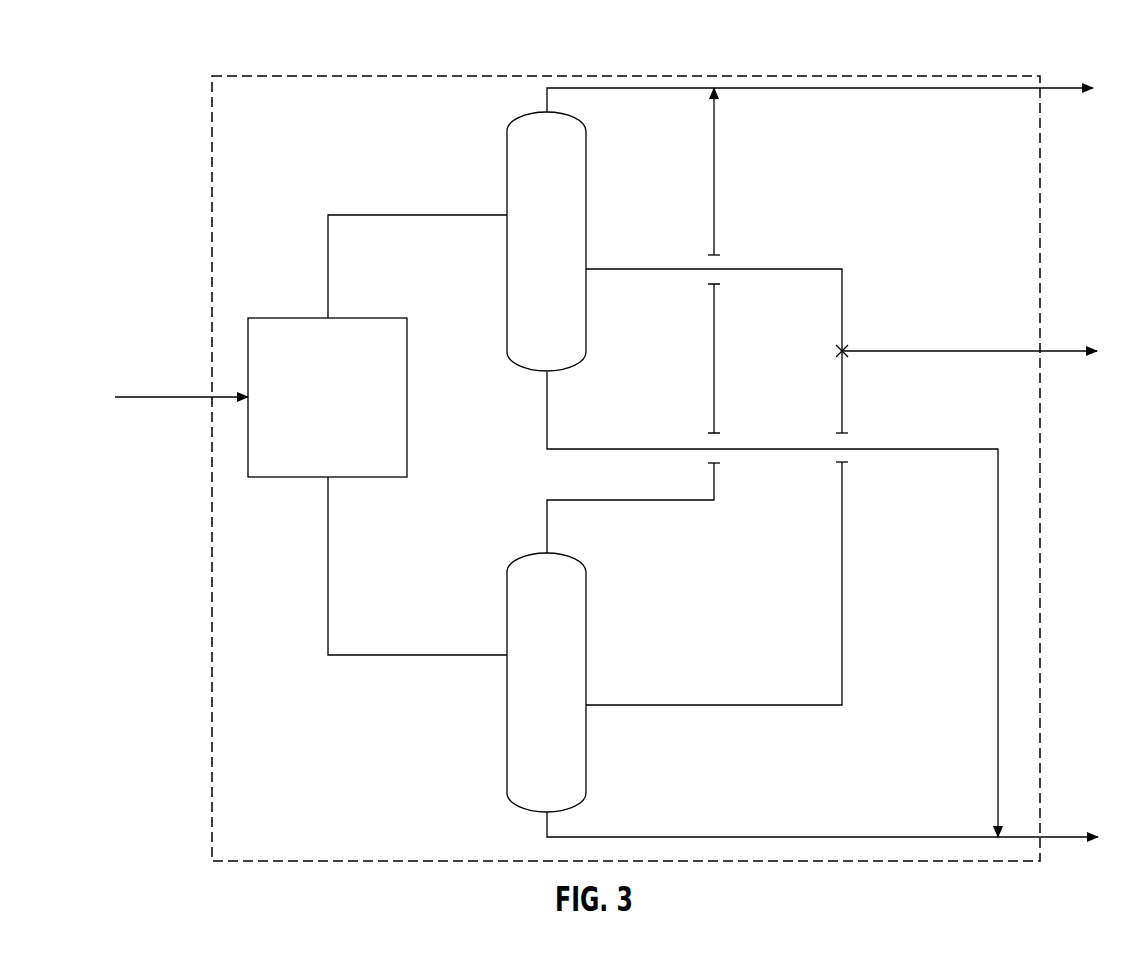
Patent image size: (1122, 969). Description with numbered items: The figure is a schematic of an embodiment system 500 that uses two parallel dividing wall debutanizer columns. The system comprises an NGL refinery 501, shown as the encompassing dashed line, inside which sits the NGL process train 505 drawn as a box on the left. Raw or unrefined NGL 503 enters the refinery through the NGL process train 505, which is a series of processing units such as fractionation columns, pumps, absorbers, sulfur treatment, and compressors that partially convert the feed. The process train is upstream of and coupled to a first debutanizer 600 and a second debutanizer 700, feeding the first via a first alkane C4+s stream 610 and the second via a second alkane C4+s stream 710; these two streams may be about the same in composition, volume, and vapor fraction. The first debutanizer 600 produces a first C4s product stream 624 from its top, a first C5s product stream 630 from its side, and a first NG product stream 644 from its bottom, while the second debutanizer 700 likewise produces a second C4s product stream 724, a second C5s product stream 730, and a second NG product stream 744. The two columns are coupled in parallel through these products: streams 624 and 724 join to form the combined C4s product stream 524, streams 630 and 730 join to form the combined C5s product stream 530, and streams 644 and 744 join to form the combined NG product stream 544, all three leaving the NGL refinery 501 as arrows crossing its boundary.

The embodiment system 500 is at (164, 42).
The NGL refinery 501 is at (990, 78).
The raw or unrefined NGL 503 is at (182, 397).
The NGL process train 505 is at (349, 412).
The combined C4s product stream 524 is at (962, 90).
The combined C5s product stream 530 is at (962, 353).
The combined NG product stream 544 is at (1062, 836).
The first debutanizer 600 is at (567, 257).
The first alkane C4+s stream 610 is at (370, 215).
The first C4s product stream 624 is at (608, 90).
The first C5s product stream 630 is at (608, 271).
The first NG product stream 644 is at (592, 448).
The second debutanizer 700 is at (567, 694).
The second alkane C4+s stream 710 is at (376, 657).
The second C4s product stream 724 is at (595, 502).
The second C5s product stream 730 is at (695, 704).
The second NG product stream 744 is at (695, 836).